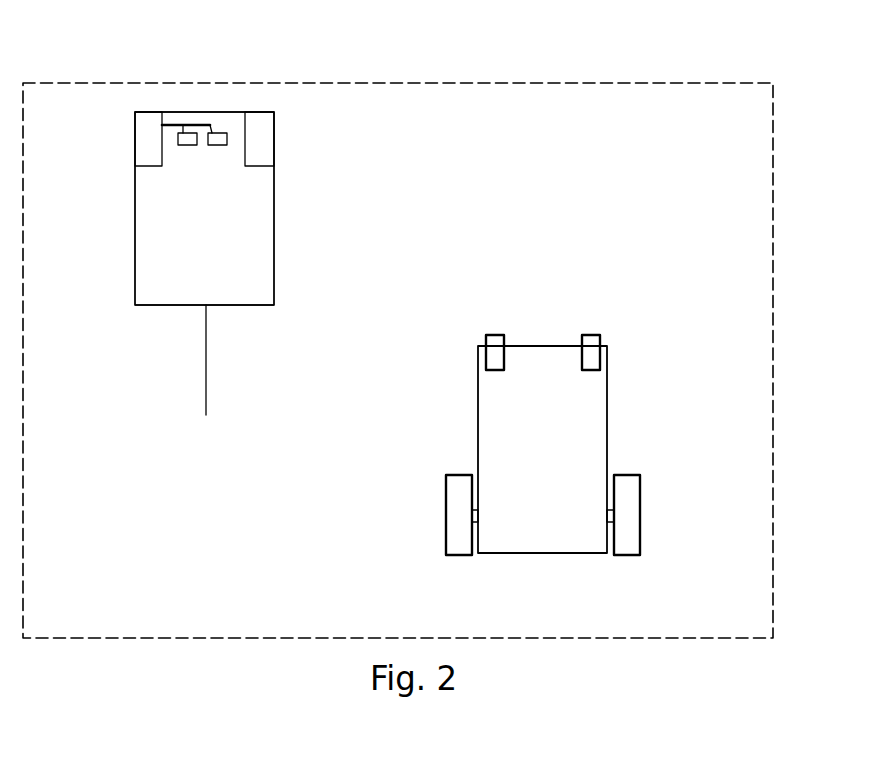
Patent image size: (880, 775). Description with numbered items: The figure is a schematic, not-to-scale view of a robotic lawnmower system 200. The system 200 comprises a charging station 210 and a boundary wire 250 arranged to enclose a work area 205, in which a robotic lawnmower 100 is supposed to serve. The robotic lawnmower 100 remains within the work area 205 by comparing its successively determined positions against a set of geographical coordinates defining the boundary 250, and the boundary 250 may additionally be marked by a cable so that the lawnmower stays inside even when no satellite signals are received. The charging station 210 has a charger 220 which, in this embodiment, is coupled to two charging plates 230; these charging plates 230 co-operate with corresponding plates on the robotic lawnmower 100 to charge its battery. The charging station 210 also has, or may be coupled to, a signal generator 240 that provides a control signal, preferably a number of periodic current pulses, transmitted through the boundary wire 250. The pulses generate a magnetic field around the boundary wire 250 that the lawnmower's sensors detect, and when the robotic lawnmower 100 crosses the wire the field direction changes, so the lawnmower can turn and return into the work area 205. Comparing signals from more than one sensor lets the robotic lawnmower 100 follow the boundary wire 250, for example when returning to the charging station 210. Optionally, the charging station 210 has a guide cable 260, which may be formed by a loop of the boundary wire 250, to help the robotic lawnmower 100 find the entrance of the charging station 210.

The robotic lawnmower 100 is at (607, 468).
The robotic lawnmower system 200 is at (124, 105).
The work area 205 is at (570, 104).
The charging station 210 is at (134, 172).
The charger 220 is at (144, 121).
The charging plates 230 is at (190, 133).
The signal generator 240 is at (274, 153).
The boundary wire 250 is at (713, 83).
The guide cable 260 is at (206, 341).